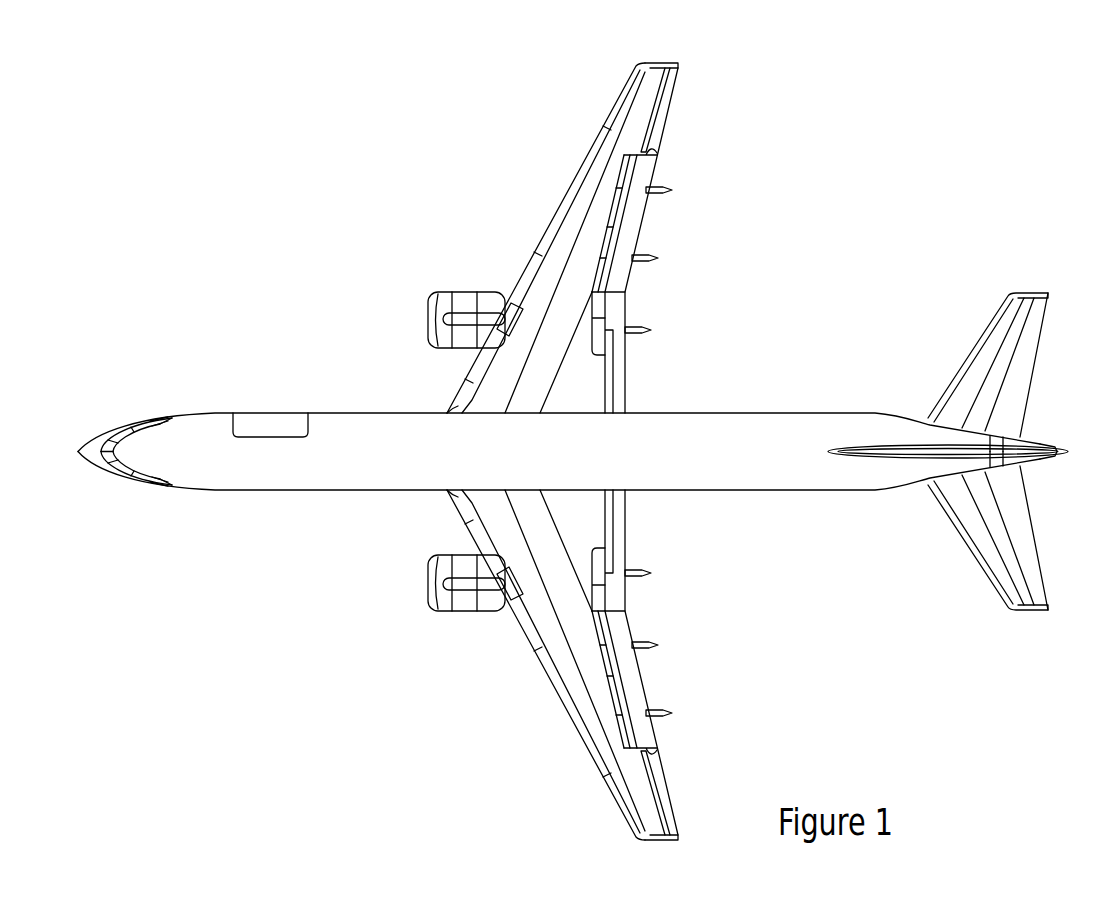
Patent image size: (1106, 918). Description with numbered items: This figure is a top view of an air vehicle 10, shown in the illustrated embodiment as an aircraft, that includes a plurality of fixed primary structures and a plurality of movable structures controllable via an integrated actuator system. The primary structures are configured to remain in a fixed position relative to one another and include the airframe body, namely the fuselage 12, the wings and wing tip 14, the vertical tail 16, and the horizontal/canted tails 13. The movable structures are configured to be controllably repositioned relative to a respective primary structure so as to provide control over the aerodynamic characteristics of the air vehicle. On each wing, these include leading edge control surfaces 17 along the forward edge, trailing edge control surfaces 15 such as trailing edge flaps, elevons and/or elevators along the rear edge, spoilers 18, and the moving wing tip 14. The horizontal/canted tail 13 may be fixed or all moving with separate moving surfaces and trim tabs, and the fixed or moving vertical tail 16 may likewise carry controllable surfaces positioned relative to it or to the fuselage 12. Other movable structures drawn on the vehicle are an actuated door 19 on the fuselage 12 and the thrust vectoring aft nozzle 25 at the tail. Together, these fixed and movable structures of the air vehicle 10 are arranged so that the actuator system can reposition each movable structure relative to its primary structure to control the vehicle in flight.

The air vehicle 10 is at (585, 451).
The fuselage 12 is at (757, 476).
The horizontal/canted tail 13 is at (1023, 362).
The wing tip 14 is at (653, 73).
The trailing edge control surfaces 15 is at (643, 217).
The vertical tail 16 is at (903, 455).
The leading edge control surfaces 17 is at (556, 214).
The spoilers 18 is at (615, 244).
The actuated doors 19 is at (273, 417).
The thrust vectoring aft nozzle 25 is at (1053, 441).